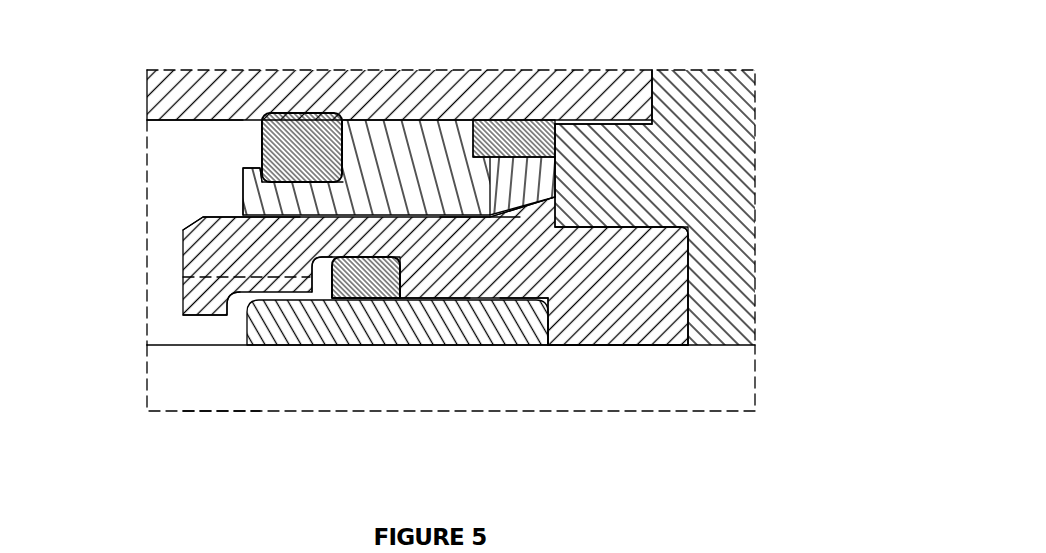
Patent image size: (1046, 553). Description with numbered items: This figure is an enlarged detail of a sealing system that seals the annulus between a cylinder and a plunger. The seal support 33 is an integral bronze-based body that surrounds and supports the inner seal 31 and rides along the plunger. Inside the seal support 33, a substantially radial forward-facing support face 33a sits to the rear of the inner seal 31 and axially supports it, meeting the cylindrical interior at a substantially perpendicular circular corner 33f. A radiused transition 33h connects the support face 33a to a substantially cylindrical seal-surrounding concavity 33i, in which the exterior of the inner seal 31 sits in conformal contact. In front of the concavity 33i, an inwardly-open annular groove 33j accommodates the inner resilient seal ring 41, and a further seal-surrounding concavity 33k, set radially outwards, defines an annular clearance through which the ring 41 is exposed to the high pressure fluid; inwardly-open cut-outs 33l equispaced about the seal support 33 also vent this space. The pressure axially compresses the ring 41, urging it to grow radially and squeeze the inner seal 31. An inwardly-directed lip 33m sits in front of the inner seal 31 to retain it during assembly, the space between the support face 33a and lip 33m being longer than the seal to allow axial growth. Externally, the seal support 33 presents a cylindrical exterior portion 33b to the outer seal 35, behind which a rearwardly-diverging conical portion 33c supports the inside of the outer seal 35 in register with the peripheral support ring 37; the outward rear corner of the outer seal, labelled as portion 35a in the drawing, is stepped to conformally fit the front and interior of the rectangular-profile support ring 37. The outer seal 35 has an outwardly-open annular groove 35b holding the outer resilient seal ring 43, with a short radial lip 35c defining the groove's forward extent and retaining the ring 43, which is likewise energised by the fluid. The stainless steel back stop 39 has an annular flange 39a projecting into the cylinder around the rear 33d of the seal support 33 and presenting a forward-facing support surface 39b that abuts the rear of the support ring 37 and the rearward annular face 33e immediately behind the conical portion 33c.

The inner seal 31 is at (397, 322).
The seal support 33 is at (435, 271).
The forward-facing support face 33a is at (557, 337).
The cylindrical exterior portion 33b is at (293, 215).
The rearwardly-diverging conical portion 33c is at (507, 213).
The rear of the seal support 33d is at (621, 286).
The rearward annular face 33e is at (553, 196).
The perpendicular circular corner 33f is at (547, 353).
The radiused transition 33h is at (542, 303).
The seal-surrounding concavity 33i is at (442, 305).
The inwardly-open annular groove 33j is at (313, 285).
The further cylindrical seal-surrounding concavity 33k is at (220, 410).
The inwardly-open cut-outs 33l is at (215, 277).
The inwardly-directed lip 33m is at (198, 300).
The outer seal 35 is at (417, 173).
The dielectric layer first portion 35a is at (522, 186).
The outwardly-open annular groove 35b is at (305, 186).
The short radial lip 35c is at (165, 177).
The peripheral support ring 37 is at (495, 147).
The back stop 39 is at (708, 187).
The annular flange 39a is at (592, 152).
The forward-facing support surface 39b is at (550, 193).
The inner resilient seal ring 41 is at (366, 277).
The outer resilient seal ring 43 is at (302, 147).